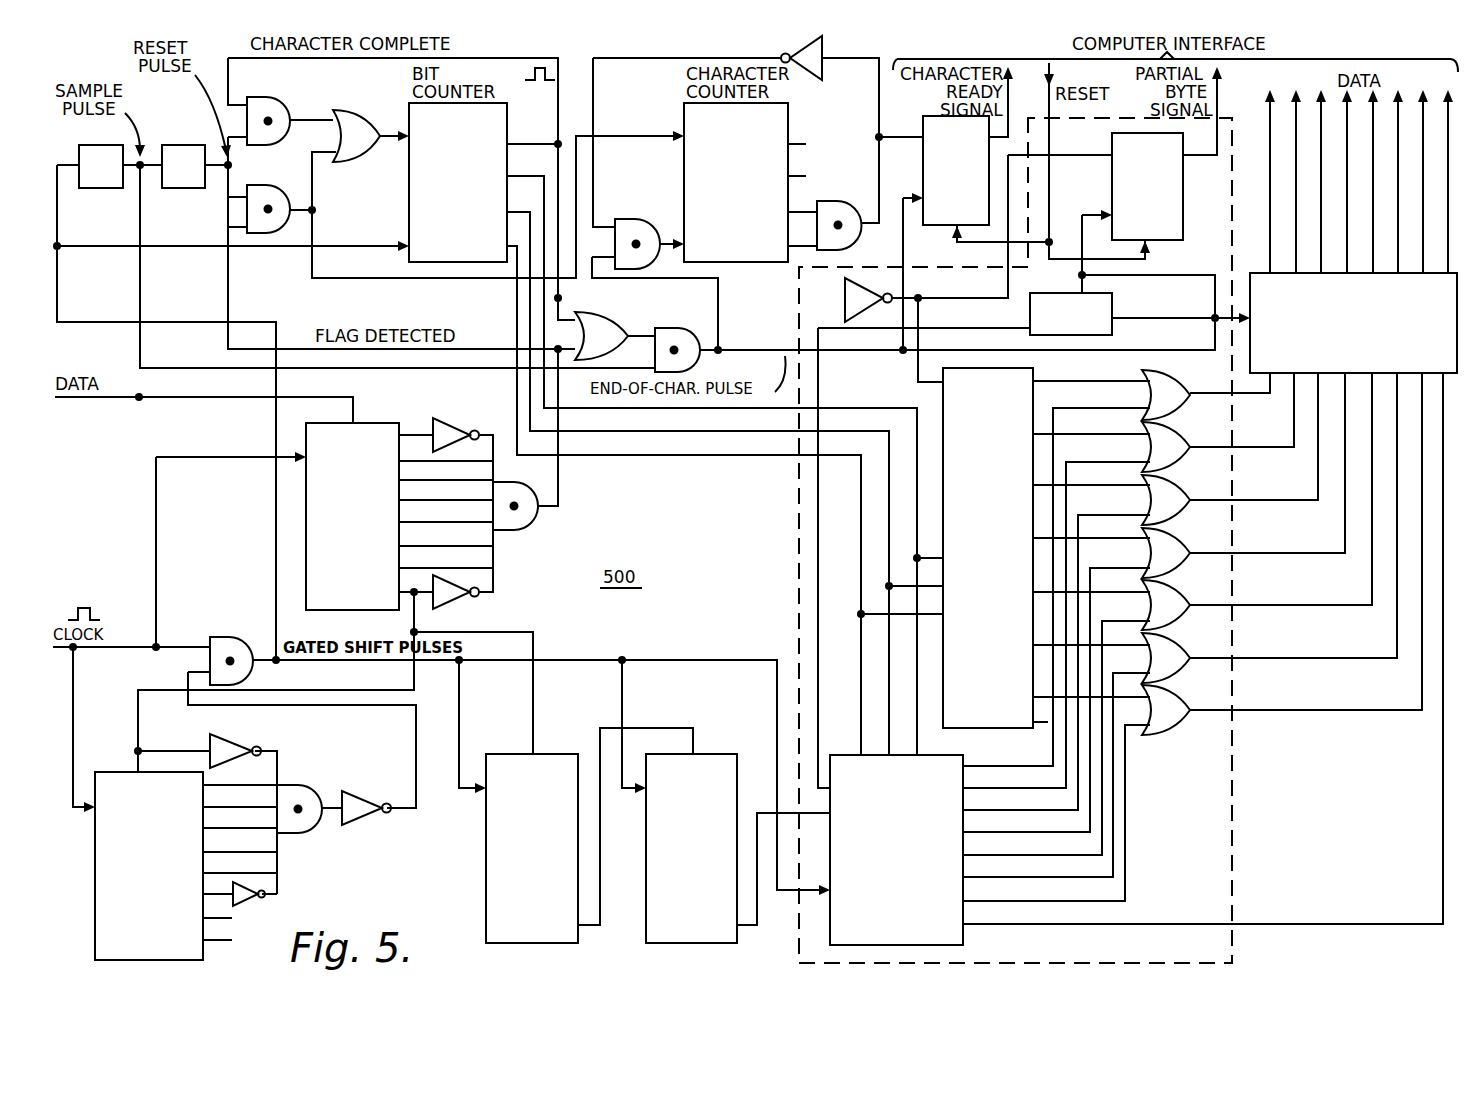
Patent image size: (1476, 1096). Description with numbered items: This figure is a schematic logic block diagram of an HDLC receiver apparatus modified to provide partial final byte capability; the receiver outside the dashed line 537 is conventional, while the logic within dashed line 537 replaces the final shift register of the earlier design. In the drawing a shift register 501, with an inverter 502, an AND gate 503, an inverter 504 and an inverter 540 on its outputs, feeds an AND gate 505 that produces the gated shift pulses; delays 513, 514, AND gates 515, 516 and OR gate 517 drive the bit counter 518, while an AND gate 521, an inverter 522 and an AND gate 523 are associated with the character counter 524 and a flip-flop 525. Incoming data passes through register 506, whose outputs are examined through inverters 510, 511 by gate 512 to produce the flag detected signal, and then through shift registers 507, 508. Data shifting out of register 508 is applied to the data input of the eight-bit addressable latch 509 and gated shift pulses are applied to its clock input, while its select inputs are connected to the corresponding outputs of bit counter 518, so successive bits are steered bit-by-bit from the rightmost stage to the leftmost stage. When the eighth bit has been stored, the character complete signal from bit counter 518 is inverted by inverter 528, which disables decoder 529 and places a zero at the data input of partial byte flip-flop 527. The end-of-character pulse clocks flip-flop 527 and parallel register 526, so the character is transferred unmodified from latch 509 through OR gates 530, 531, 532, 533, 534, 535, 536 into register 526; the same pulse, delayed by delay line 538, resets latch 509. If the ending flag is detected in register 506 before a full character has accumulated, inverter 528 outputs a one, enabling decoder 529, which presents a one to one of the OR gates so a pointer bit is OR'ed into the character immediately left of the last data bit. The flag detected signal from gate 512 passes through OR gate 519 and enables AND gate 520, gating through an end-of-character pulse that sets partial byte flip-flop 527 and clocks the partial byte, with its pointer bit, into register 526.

The 8-bit shift register 501 is at (95, 858).
The inverter 502 is at (215, 735).
The AND gate 503 is at (305, 785).
The inverter 504 is at (352, 796).
The AND gate 505 is at (222, 637).
The register 506 is at (306, 518).
The 8-bit shift register 507 is at (510, 754).
The register 508 is at (714, 754).
The 8-bit addressable latch 509 is at (955, 757).
The inverter 510 is at (440, 410).
The inverter 511 is at (445, 606).
The gate 512 is at (535, 518).
The delay 513 is at (92, 188).
The delay 514 is at (175, 188).
The AND gate 515 is at (256, 99).
The AND gate 516 is at (266, 186).
The OR gate 517 is at (343, 115).
The bit counter 518 is at (409, 176).
The OR-gate 519 is at (600, 313).
The AND-gate 520 is at (688, 333).
The AND gate 521 is at (624, 221).
The inverter 522 is at (820, 50).
The AND gate 523 is at (830, 201).
The character counter 524 is at (684, 155).
The flip-flop 525 is at (940, 118).
The parallel register 526 is at (1282, 376).
The partial byte flip-flop 527 is at (1120, 135).
The inverter 528 is at (852, 284).
The decoder 529 is at (940, 410).
The OR-gate 530 is at (1168, 376).
The OR-gate 531 is at (1168, 428).
The OR-gate 532 is at (1168, 481).
The OR-gate 533 is at (1168, 534).
The OR-gate 534 is at (1168, 586).
The OR-gate 535 is at (1168, 639).
The OR-gate 536 is at (1168, 691).
The dashed line 537 is at (797, 605).
The delay line 538 is at (1112, 320).
The inverter 540 is at (275, 896).